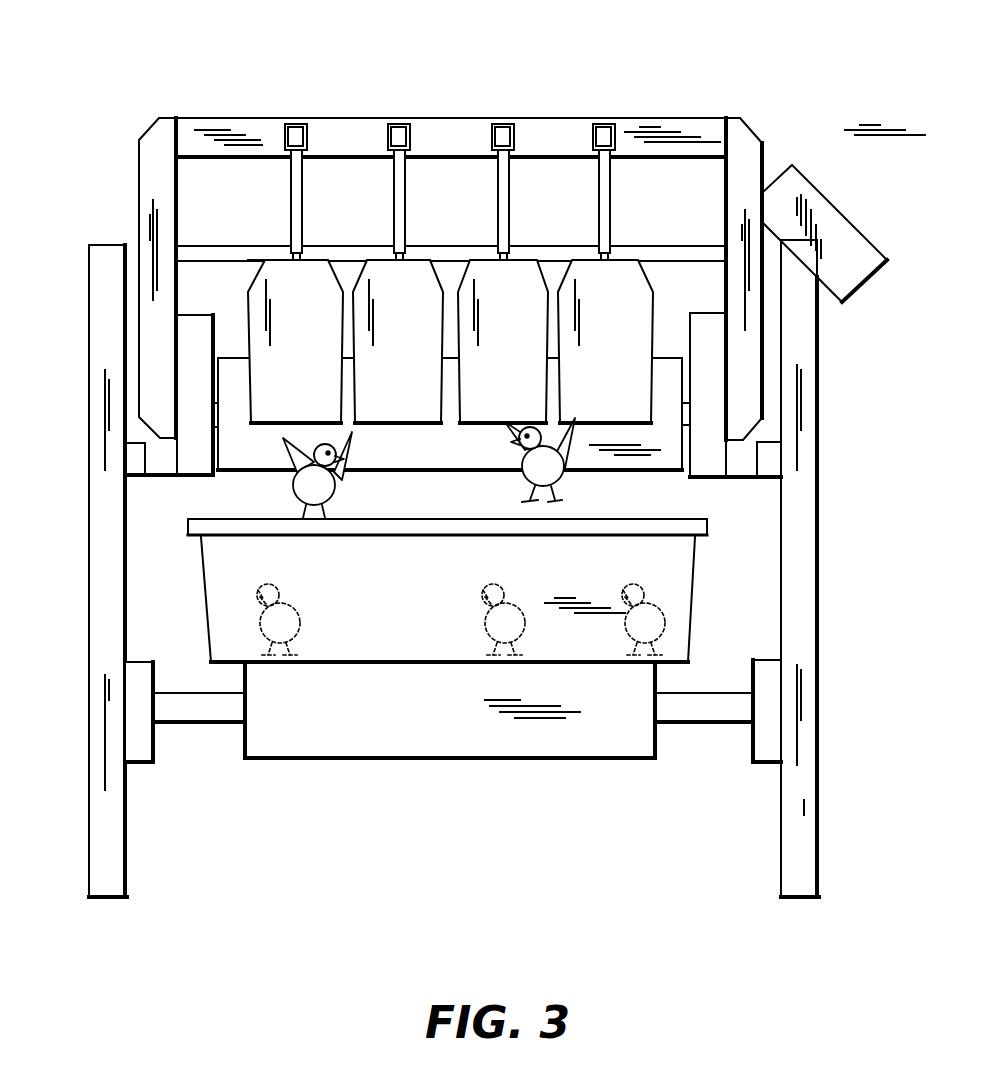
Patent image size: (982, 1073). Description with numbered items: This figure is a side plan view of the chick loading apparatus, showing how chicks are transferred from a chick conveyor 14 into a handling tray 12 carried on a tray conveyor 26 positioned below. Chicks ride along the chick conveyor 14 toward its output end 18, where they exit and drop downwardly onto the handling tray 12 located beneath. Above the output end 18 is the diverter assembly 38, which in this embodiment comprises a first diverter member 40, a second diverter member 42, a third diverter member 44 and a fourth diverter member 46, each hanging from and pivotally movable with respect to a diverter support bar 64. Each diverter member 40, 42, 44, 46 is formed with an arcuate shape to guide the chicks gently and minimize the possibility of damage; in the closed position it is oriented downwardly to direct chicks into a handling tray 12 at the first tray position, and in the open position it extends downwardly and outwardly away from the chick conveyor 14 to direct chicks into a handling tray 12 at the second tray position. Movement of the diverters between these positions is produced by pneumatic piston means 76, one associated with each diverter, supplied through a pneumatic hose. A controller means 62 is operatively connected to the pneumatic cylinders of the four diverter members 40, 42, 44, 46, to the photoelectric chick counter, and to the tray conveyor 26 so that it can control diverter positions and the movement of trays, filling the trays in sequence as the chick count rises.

The handling tray 12 is at (402, 622).
The chick conveyor 14 is at (425, 461).
The output end 18 is at (250, 450).
The tray conveyor 26 is at (389, 727).
The diverter assembly 38 is at (598, 103).
The first diverter member 40 is at (311, 404).
The second diverter member 42 is at (619, 404).
The third diverter member 44 is at (517, 404).
The fourth diverter member 46 is at (414, 404).
The controller means 62 is at (862, 265).
The diverter support bar 64 is at (247, 128).
The pneumatic piston means 76 is at (397, 212).